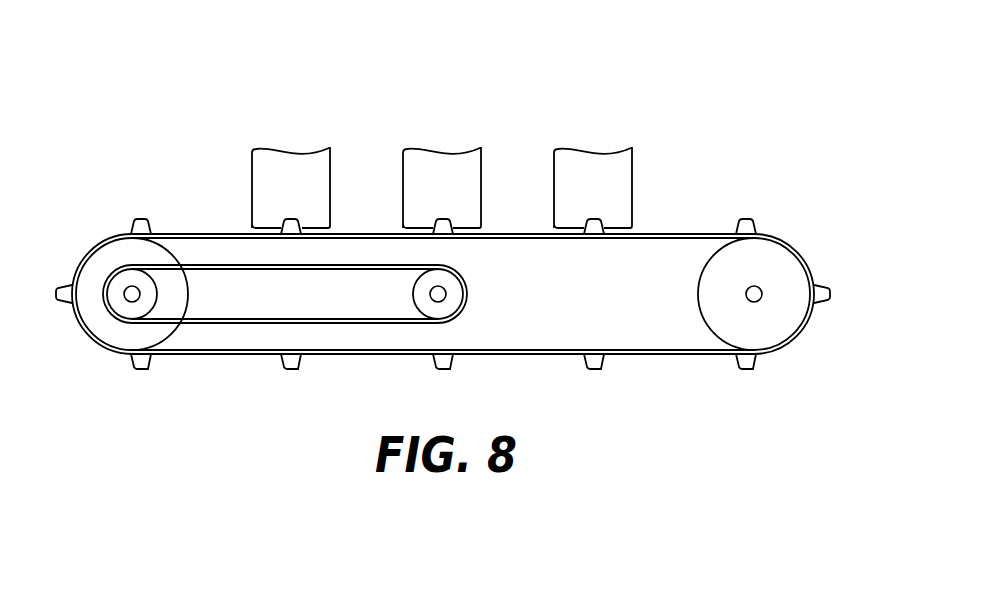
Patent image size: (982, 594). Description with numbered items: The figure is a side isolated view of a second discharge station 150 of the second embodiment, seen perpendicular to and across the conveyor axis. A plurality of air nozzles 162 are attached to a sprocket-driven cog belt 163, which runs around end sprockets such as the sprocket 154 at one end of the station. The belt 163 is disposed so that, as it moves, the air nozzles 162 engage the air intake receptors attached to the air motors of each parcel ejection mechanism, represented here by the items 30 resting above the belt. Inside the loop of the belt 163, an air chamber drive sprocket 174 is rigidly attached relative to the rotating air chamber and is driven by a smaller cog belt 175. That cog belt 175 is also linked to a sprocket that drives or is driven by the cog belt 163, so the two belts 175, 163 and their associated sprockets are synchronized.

The second discharge station 150 is at (603, 78).
The articles / containers 30 is at (570, 178).
The sprocket-driven cog belt 163 is at (673, 231).
The air nozzle 162 is at (748, 228).
The pulley 154 is at (777, 330).
The air chamber drive sprocket 174 is at (452, 300).
The cog belt 175 is at (230, 322).